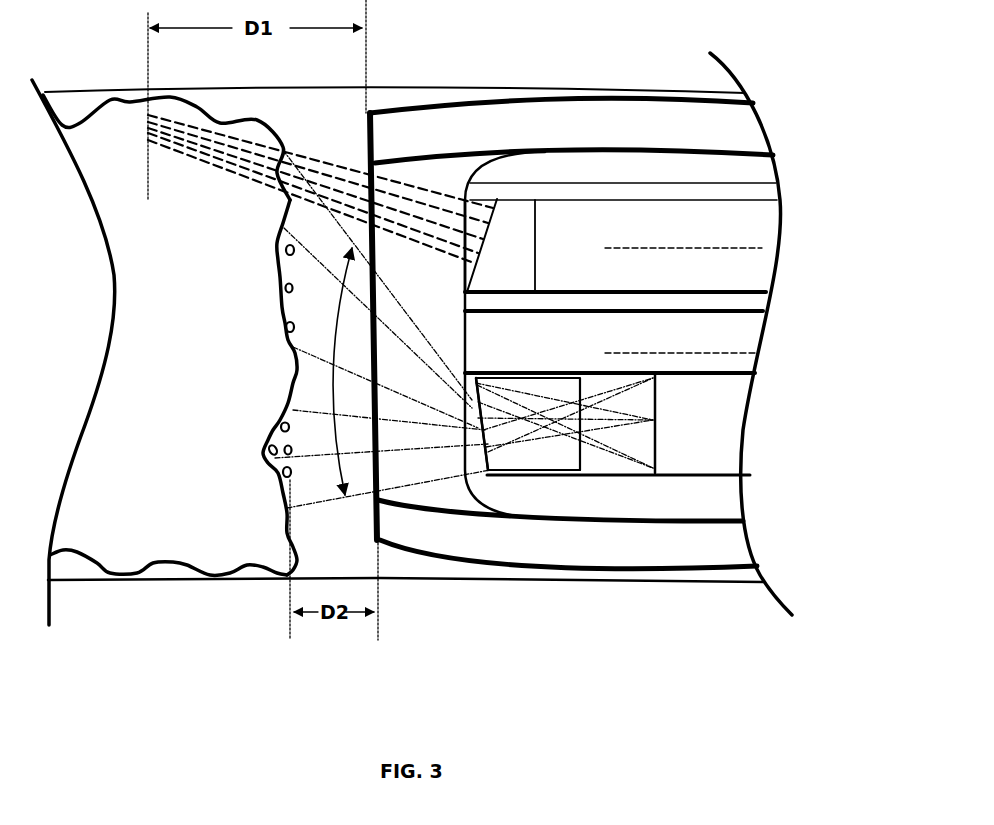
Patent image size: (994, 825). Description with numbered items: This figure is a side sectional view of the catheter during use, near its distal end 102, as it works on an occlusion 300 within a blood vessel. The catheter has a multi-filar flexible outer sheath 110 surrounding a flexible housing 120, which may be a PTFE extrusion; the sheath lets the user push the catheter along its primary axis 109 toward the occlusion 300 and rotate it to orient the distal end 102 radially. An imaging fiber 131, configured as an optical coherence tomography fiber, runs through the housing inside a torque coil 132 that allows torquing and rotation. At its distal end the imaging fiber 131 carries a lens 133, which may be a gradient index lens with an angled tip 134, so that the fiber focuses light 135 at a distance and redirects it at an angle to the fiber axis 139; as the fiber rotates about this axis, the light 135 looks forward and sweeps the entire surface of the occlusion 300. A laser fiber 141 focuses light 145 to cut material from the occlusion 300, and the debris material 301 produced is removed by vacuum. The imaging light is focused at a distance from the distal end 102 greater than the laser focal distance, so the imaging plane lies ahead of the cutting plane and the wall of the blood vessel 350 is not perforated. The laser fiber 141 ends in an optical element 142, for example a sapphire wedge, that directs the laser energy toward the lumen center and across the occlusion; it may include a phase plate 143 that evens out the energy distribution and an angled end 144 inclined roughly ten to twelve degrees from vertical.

The distal end 102 is at (375, 105).
The primary axis 109 is at (690, 353).
The multi-filar flexible outer sheath 110 is at (748, 122).
The flexible housing 120 is at (743, 319).
The imaging fiber 131 is at (748, 277).
The torque coil 132 is at (766, 192).
The lens 133 is at (520, 270).
The angled tip 134 is at (487, 212).
The light 135 is at (145, 118).
The axis 139 is at (698, 248).
The laser fiber 141 is at (725, 435).
The optical element 142 is at (550, 398).
The phase plate 143 is at (500, 470).
The angled end 144 is at (470, 403).
The light 145 is at (332, 371).
The occlusion 300 is at (136, 274).
The debris material 301 is at (268, 293).
The wall of the blood vessel 350 is at (218, 105).